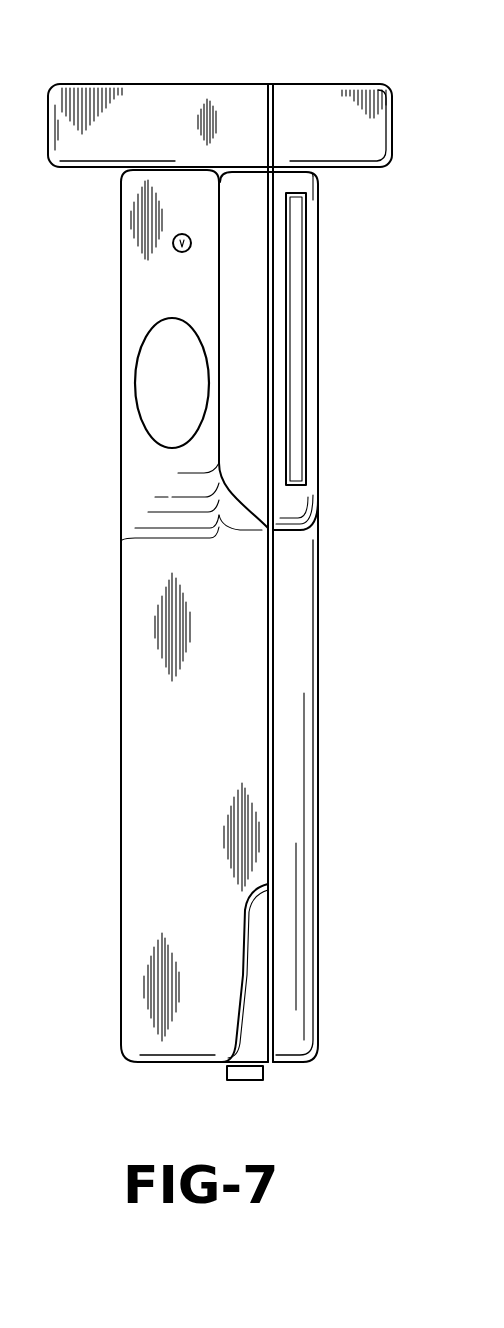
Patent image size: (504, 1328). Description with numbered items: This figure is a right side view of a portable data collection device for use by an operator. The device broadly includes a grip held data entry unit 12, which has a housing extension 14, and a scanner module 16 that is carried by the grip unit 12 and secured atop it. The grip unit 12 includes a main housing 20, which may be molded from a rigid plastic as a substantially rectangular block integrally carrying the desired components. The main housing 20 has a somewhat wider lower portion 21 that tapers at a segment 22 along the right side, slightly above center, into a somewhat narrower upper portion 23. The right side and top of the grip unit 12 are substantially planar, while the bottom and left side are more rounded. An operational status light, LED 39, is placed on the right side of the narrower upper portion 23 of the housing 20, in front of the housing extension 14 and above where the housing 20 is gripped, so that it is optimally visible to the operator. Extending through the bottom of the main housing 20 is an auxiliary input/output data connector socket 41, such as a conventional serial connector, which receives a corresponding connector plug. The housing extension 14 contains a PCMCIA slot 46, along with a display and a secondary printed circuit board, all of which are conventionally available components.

The grip held data entry unit 12 is at (112, 241).
The housing extension 14 is at (330, 276).
The scanner module 16 is at (155, 78).
The main housing 20 is at (120, 658).
The lower portion 21 is at (153, 798).
The segment 22 is at (168, 505).
The upper portion 23 is at (124, 432).
The LED 39 is at (181, 253).
The auxiliary input/output data connector socket 41 is at (237, 1072).
The PCMCIA slot 46 is at (297, 392).